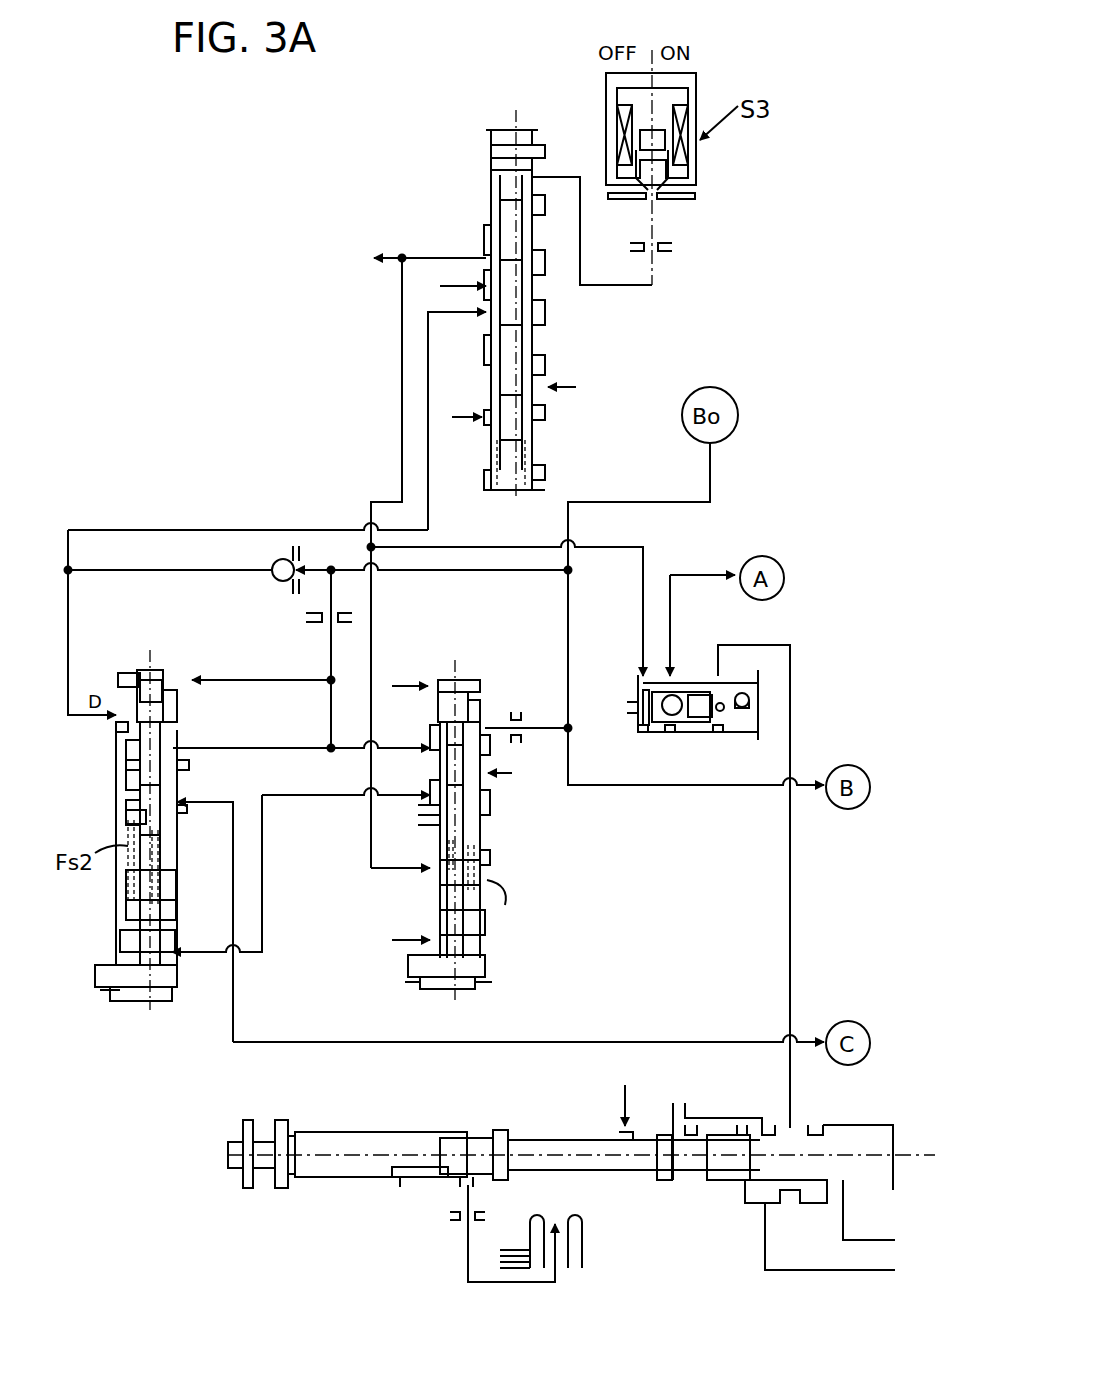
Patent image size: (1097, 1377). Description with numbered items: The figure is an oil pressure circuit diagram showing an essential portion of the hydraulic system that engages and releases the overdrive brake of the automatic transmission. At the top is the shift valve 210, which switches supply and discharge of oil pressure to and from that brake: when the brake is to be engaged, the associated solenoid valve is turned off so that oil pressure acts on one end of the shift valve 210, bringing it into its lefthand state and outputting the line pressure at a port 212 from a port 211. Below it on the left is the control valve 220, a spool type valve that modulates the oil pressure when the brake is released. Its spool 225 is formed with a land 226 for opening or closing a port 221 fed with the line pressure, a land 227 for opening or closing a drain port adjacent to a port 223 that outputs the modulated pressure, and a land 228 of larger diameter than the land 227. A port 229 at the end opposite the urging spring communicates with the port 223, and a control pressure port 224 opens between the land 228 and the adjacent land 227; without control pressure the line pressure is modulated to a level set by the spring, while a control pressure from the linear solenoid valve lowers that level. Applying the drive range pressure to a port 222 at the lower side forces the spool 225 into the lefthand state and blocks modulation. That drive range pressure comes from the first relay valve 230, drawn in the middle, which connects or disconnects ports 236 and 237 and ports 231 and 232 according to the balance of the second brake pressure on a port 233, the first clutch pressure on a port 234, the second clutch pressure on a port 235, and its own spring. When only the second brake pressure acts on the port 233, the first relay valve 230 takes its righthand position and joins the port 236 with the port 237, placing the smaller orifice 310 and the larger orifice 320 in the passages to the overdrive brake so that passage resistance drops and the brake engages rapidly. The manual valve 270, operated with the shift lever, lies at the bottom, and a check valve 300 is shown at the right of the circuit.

The shift valve 210 is at (486, 153).
The port 211 is at (487, 290).
The port 212 is at (490, 318).
The B0 control valve 220 is at (122, 1012).
The port 221 is at (118, 722).
The port 222 is at (170, 966).
The port 223 is at (178, 748).
The control pressure port 224 is at (182, 806).
The spool 225 is at (134, 678).
The land 226 is at (160, 692).
The land 227 is at (140, 780).
The land 228 is at (127, 817).
The port 229 is at (193, 682).
The first relay valve 230 is at (508, 875).
The port 231 is at (438, 794).
The port 232 is at (490, 774).
The port 233 is at (435, 685).
The port 234 is at (420, 867).
The port 235 is at (410, 941).
The port 236 is at (438, 745).
The port 237 is at (497, 718).
The manual valve 270 is at (412, 1124).
The check valve 300 is at (697, 672).
The smaller orifice 310 is at (321, 622).
The larger orifice 320 is at (525, 722).